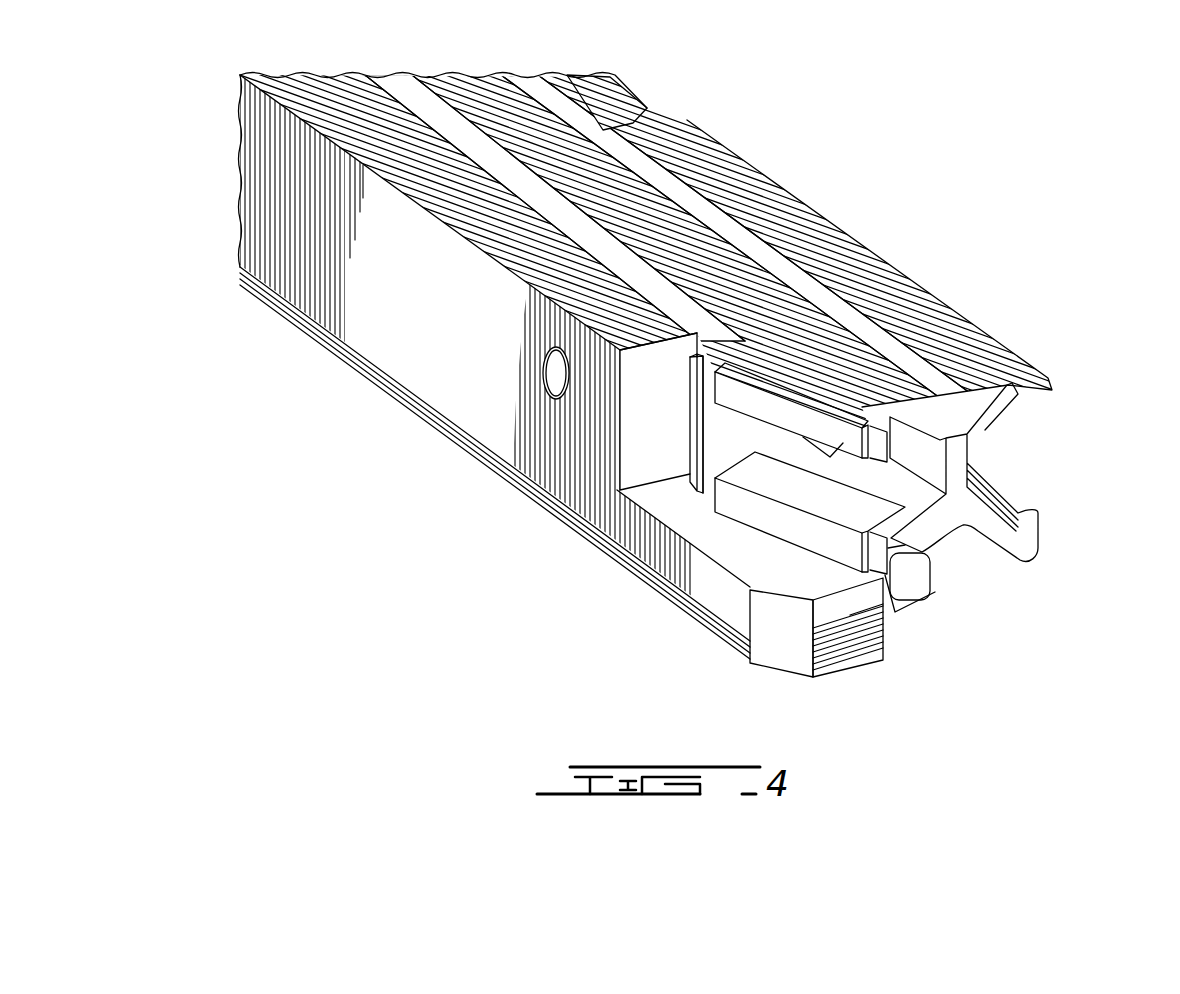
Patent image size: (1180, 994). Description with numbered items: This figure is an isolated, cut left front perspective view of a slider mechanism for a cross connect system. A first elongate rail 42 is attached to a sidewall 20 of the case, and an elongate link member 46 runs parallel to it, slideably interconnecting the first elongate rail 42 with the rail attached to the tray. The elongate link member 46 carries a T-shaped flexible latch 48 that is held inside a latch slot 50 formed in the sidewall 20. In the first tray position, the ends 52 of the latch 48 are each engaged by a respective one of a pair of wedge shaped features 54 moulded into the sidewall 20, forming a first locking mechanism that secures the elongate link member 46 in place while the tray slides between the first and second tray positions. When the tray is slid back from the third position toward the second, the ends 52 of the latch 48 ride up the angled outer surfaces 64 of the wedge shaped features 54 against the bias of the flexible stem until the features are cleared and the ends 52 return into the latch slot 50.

The sidewall 20 is at (392, 287).
The first elongate rail 42 is at (897, 607).
The elongate link member 46 is at (980, 510).
The T-shaped flexible latch 48 is at (690, 472).
The latch slot 50 is at (663, 443).
The ends 52 is at (697, 393).
The wedge shaped features 54 is at (833, 505).
The angled outer surfaces 64 is at (800, 527).